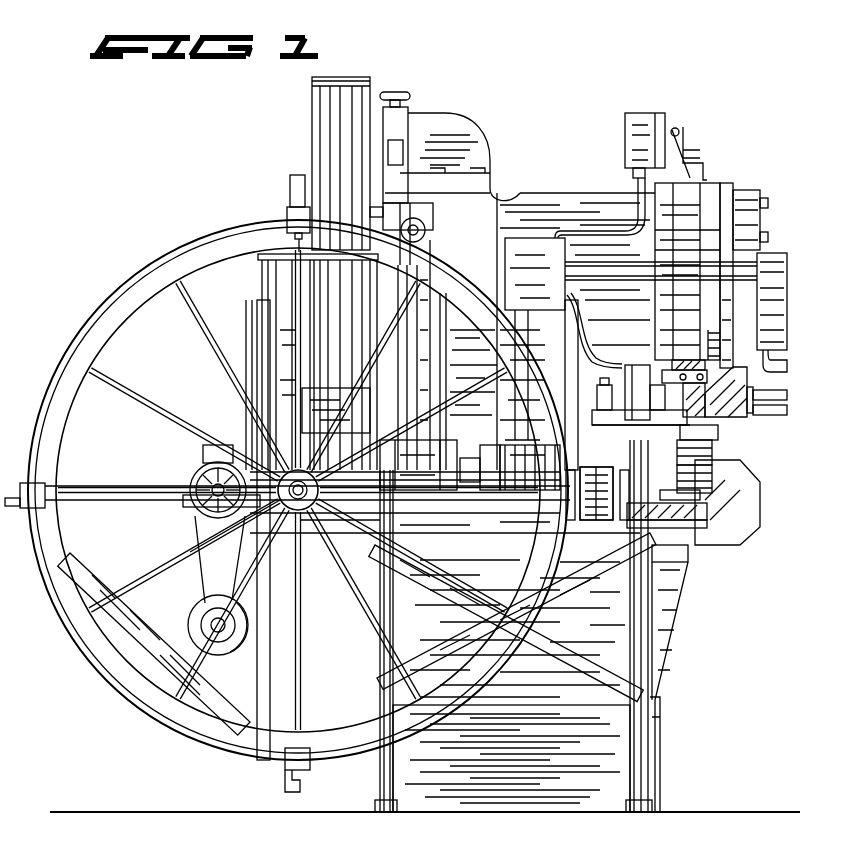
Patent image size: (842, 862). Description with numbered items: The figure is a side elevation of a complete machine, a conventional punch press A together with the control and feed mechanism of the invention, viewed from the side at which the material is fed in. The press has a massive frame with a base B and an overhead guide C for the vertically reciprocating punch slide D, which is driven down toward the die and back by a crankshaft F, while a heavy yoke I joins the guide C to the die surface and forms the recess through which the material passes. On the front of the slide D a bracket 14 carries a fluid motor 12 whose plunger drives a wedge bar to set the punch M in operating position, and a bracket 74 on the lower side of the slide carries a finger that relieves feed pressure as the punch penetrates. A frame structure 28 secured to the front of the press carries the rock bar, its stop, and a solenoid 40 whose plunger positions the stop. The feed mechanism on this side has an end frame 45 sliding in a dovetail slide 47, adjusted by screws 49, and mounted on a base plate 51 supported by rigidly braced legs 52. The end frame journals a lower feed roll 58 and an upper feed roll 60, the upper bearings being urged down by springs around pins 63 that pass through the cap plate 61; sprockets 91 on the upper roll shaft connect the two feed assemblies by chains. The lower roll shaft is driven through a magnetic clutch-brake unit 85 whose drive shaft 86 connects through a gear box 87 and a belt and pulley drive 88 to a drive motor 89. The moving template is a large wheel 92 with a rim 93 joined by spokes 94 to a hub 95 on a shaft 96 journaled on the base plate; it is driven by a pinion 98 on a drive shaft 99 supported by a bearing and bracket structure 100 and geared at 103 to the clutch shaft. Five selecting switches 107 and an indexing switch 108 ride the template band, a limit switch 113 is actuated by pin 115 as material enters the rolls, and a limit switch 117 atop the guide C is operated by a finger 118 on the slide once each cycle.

The fluid motor 12 is at (765, 418).
The bracket 14 is at (740, 375).
The frame structure 28 is at (712, 543).
The solenoid 40 is at (752, 490).
The end frame 45 is at (660, 520).
The dovetail slide 47 is at (668, 530).
The screw 49 is at (703, 505).
The base plate 51 is at (482, 517).
The legs 52 is at (650, 665).
The lower feed roll 58 is at (702, 480).
The upper feed roll 60 is at (715, 444).
The cap plate 61 is at (585, 415).
The pins 63 is at (612, 393).
The bracket 74 is at (662, 362).
The magnetic clutch-brake unit 85 is at (502, 442).
The drive shaft 86 is at (350, 472).
The gear box 87 is at (235, 445).
The belt and pulley drive 88 is at (196, 526).
The drive motor 89 is at (198, 605).
The sprockets 91 is at (565, 450).
The wheel 92 is at (120, 708).
The rim 93 is at (112, 652).
The spokes 94 is at (155, 398).
The hub 95 is at (318, 465).
The shaft 96 is at (245, 540).
The pinion 98 is at (428, 236).
The drive shaft 99 is at (428, 224).
The bearing and bracket structure 100 is at (420, 356).
The gear 103 is at (430, 458).
The selecting switches 107 is at (596, 520).
The indexing switch 108 is at (596, 493).
The limit switch 113 is at (628, 362).
The pin 115 is at (690, 410).
The limit switch 117 is at (657, 103).
The finger 118 is at (690, 142).
The punch press A is at (545, 192).
The base B is at (618, 748).
The overhead guide C is at (700, 197).
The punch slide D is at (690, 360).
The crankshaft F is at (422, 200).
The yoke I is at (558, 368).
The punch M is at (700, 428).